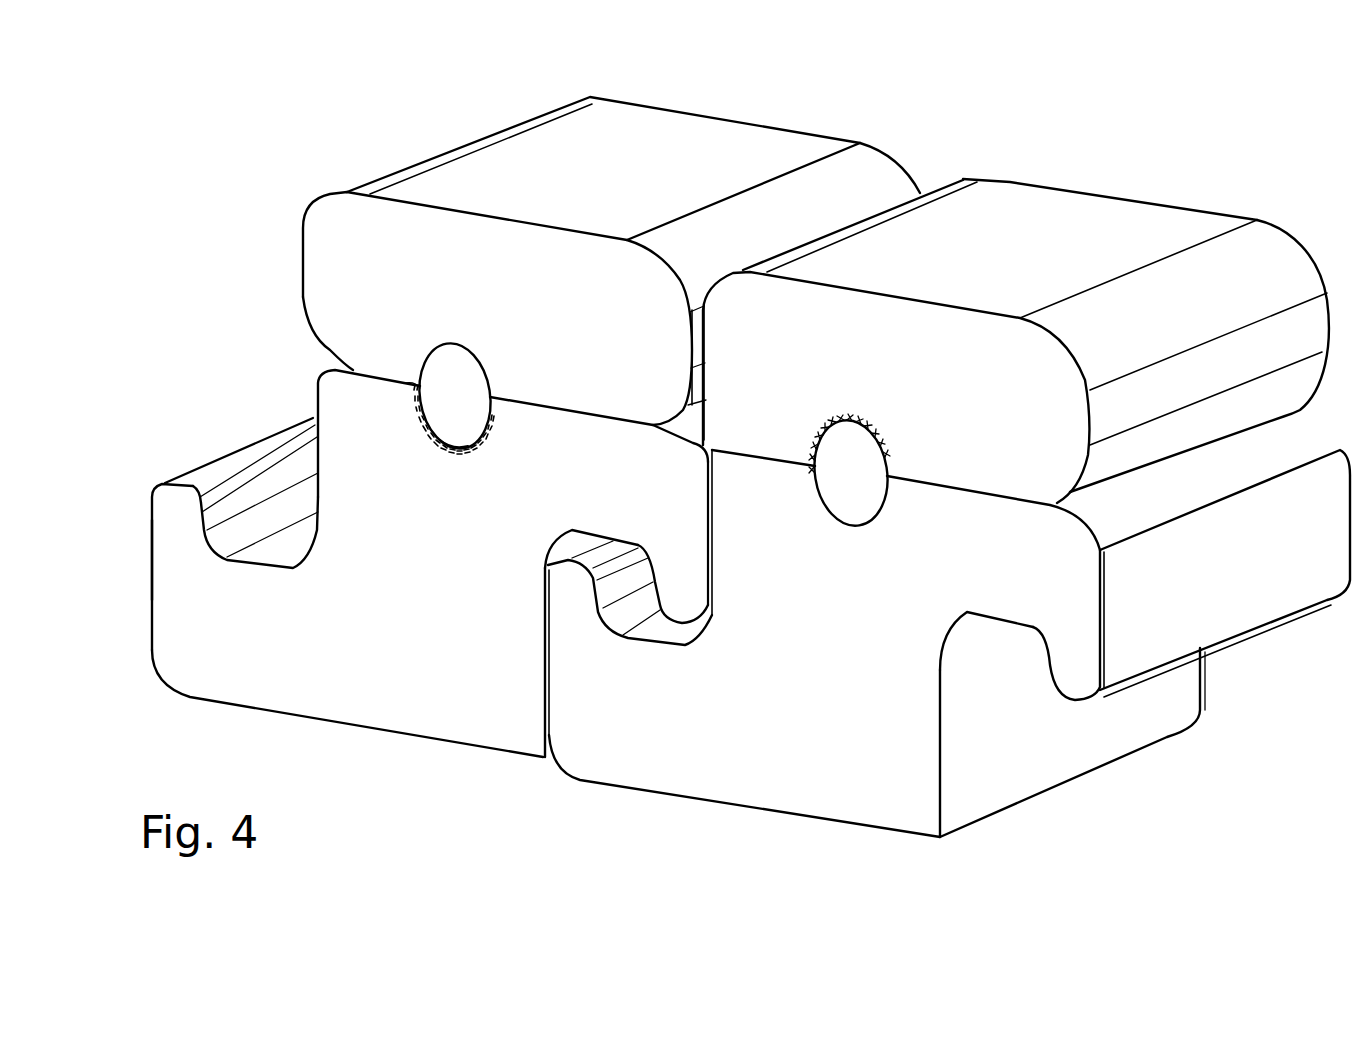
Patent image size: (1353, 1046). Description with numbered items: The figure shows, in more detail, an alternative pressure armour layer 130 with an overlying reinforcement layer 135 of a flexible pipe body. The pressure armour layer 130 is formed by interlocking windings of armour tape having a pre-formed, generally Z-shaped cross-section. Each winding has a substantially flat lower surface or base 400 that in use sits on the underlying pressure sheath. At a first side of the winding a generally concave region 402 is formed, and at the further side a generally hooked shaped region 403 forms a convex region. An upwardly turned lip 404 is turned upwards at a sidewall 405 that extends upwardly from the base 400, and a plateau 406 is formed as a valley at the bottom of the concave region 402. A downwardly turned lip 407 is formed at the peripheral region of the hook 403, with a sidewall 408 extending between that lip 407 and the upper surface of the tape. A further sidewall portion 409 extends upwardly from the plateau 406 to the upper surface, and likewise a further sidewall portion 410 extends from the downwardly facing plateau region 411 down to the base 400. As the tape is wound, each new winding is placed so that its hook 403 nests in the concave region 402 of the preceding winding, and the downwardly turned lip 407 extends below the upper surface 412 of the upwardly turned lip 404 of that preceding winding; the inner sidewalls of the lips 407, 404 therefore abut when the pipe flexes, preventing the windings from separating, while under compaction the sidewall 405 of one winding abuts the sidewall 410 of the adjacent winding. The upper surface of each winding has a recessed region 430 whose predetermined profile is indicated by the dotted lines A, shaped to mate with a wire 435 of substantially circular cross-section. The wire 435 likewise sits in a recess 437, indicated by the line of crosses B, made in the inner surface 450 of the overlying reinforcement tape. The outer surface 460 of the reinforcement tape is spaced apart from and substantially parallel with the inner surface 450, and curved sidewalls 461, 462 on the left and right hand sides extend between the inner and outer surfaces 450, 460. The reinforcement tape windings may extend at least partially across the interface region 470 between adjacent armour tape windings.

The pressure armour layer 130 is at (130, 455).
The reinforcement layer 135 is at (305, 130).
The lower surface 400 is at (353, 727).
The concave region 402 is at (233, 413).
The hook shaped region 403 is at (688, 537).
The upwardly turned lip 404 is at (163, 530).
The sidewall 405 is at (150, 623).
The plateau 406 is at (270, 548).
The downwardly turned lip 407 is at (682, 590).
The sidewall 408 is at (713, 493).
The further sidewall portion 409 is at (322, 477).
The further sidewall portion 410 is at (547, 670).
The downwardly facing plateau region 411 is at (587, 530).
The upper surface of upwardly turned lip 412 is at (207, 473).
The recessed region 430 is at (462, 447).
The wire 435 is at (440, 363).
The recess 437 is at (833, 417).
The inner surface 450 is at (573, 410).
The outer surface 460 is at (470, 170).
The curved sidewall 461 is at (307, 263).
The curved sidewall 462 is at (1222, 373).
The interface region 470 is at (700, 430).
The dotted lines A is at (488, 422).
The line of crosses B is at (870, 434).